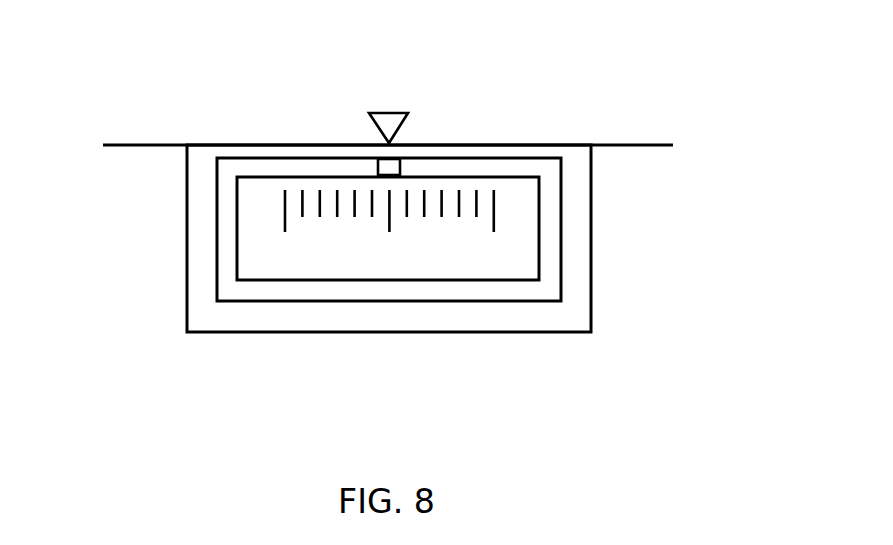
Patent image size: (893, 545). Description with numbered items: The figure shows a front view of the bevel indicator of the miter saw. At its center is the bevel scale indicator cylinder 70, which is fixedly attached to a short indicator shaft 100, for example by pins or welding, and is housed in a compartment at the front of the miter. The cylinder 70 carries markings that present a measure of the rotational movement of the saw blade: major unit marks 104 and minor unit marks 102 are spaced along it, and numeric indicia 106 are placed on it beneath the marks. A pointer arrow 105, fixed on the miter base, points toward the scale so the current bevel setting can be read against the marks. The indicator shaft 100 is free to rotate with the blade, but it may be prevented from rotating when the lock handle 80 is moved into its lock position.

The lock handle 80 is at (485, 322).
The bevel scale indicator cylinder 70 is at (522, 251).
The numeric indicia 106 is at (258, 269).
The major unit marks 104 is at (268, 223).
The minor unit marks 102 is at (370, 227).
The pointer arrow 105 is at (387, 120).
The indicator shaft 100 is at (400, 167).